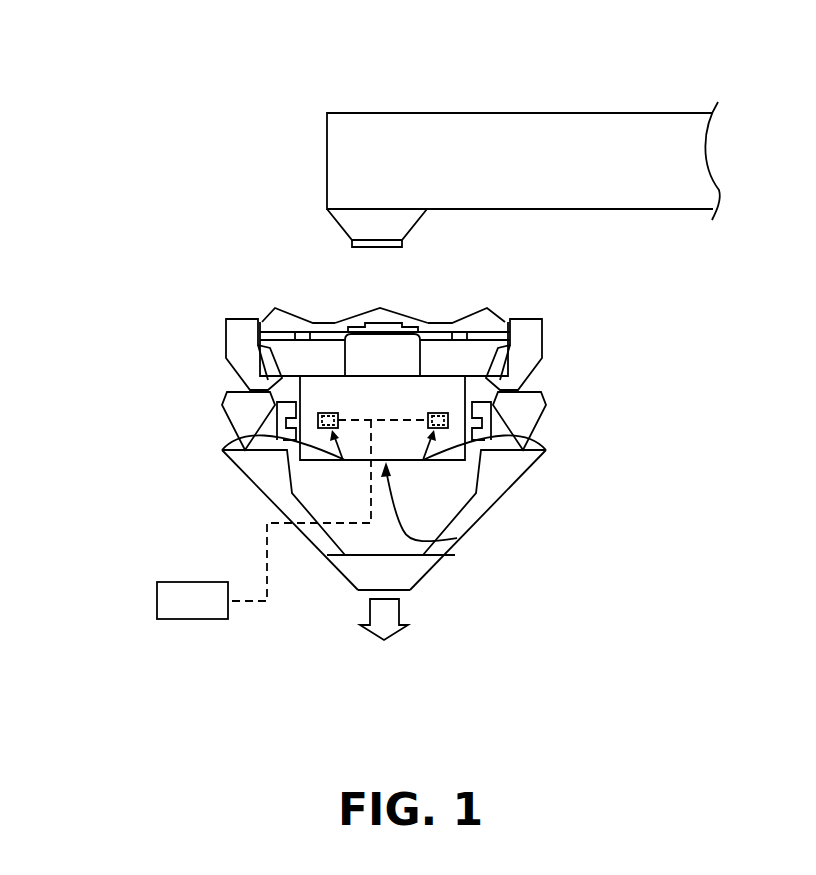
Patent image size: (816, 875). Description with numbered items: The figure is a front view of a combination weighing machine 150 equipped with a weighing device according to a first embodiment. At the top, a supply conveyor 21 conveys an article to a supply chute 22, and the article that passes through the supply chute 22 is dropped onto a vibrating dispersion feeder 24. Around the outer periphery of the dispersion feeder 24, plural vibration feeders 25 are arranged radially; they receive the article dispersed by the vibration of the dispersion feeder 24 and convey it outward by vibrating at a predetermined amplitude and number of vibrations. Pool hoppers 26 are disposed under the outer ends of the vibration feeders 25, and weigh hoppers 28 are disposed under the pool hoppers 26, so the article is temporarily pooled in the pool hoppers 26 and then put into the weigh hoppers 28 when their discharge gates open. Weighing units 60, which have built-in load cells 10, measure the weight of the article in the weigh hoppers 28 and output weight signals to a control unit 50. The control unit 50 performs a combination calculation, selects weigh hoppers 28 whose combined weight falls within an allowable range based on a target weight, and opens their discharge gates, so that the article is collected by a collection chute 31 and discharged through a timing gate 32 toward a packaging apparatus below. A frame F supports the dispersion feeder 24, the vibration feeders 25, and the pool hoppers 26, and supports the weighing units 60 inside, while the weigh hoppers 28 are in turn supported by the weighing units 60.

The combination weighing machine 150 is at (128, 96).
The supply conveyor 21 is at (340, 137).
The supply chute 22 is at (427, 213).
The dispersion feeder 24 is at (397, 320).
The vibration feeders 25 is at (280, 318).
The pool hoppers 26 is at (237, 332).
The weigh hoppers 28 is at (237, 405).
The load cells 10 is at (388, 450).
The weighing units 60 is at (232, 443).
The collection chute 31 is at (262, 483).
The timing gate 32 is at (407, 577).
The control unit 50 is at (192, 619).
The frame F is at (457, 538).